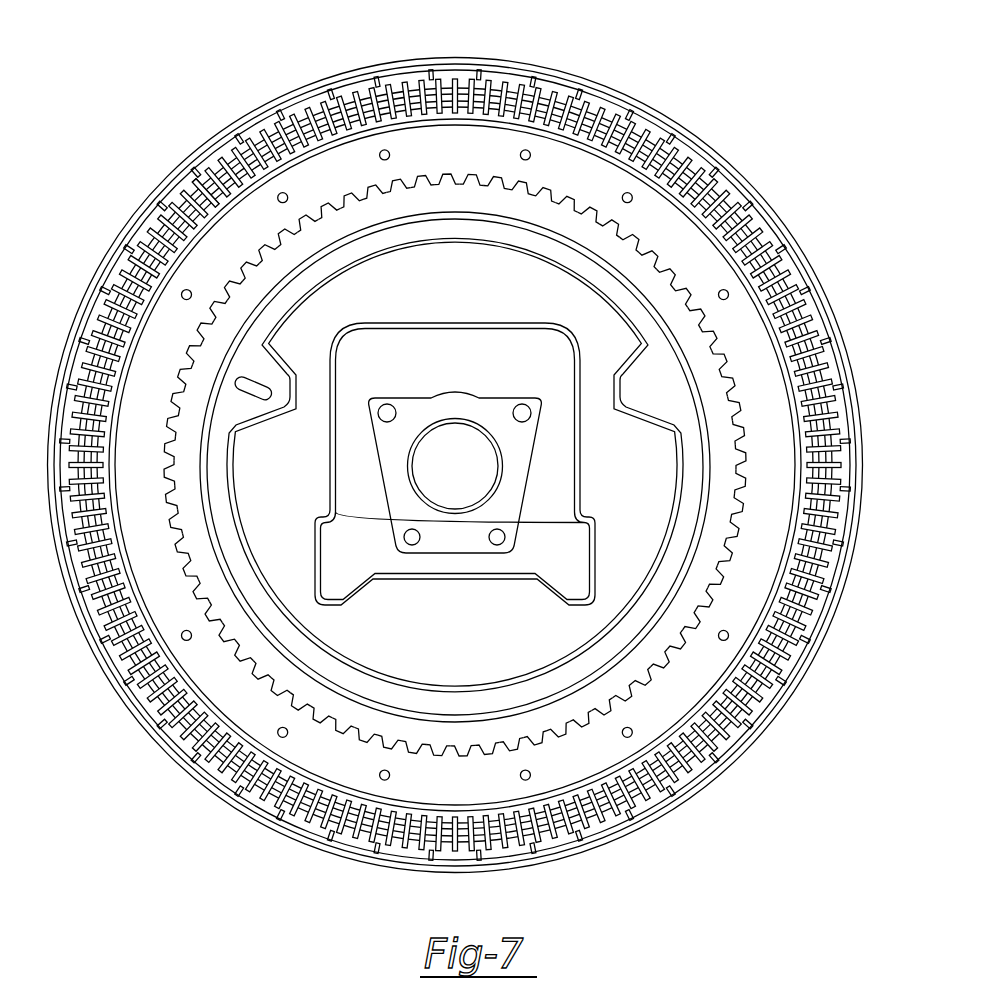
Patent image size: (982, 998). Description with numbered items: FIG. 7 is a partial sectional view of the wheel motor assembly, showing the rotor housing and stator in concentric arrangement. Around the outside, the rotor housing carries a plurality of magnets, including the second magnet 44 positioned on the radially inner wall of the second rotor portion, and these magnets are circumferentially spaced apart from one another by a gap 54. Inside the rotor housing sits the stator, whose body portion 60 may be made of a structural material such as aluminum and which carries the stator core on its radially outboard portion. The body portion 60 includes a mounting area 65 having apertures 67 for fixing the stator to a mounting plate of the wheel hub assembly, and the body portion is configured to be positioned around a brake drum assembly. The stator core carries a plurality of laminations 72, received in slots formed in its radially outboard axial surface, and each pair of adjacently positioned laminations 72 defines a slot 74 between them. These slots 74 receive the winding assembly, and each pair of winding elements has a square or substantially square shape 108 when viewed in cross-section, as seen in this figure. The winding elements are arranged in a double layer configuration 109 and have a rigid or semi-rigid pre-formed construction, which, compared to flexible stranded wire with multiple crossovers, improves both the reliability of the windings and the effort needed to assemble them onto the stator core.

The second magnet 44 is at (597, 97).
The gap 54 is at (479, 78).
The body portion 60 is at (340, 745).
The mounting area 65 is at (356, 538).
The apertures 67 is at (496, 540).
The laminations 72 is at (305, 122).
The slots 74 is at (288, 148).
The square shape 108 is at (198, 180).
The double layer configuration 109 is at (206, 216).